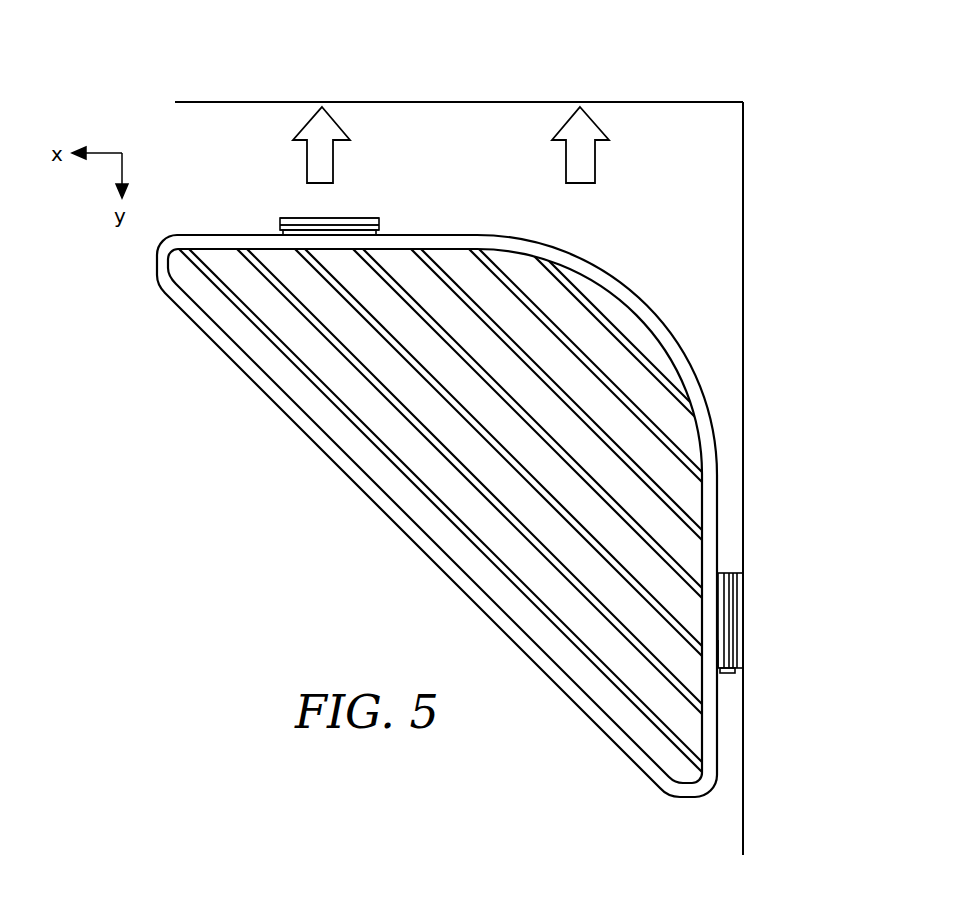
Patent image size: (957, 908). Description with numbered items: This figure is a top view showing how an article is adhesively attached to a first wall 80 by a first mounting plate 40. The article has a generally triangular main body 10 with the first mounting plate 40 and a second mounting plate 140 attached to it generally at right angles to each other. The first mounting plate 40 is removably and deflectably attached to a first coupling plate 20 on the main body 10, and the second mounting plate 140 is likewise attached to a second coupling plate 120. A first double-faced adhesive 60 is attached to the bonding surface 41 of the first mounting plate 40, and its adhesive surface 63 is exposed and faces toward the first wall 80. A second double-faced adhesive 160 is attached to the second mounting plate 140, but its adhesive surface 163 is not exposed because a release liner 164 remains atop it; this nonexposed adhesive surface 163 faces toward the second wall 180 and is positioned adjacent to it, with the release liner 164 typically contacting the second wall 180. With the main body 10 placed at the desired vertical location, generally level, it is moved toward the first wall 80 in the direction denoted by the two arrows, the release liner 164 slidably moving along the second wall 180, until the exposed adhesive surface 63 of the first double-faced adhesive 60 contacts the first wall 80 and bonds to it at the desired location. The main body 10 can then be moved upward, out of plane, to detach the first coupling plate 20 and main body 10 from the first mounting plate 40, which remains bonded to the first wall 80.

The main body 10 is at (338, 468).
The first coupling plate 20 is at (283, 232).
The first mounting plate 40 is at (378, 234).
The bonding surface 41 is at (345, 226).
The first double-faced adhesive 60 is at (296, 220).
The adhesive surface 63 is at (362, 218).
The first wall 80 is at (453, 102).
The second coupling plate 120 is at (718, 668).
The second mounting plate 140 is at (722, 575).
The second double-faced adhesive 160 is at (735, 672).
The adhesive surface 163 is at (738, 630).
The release liner 164 is at (738, 590).
The second wall 180 is at (743, 378).